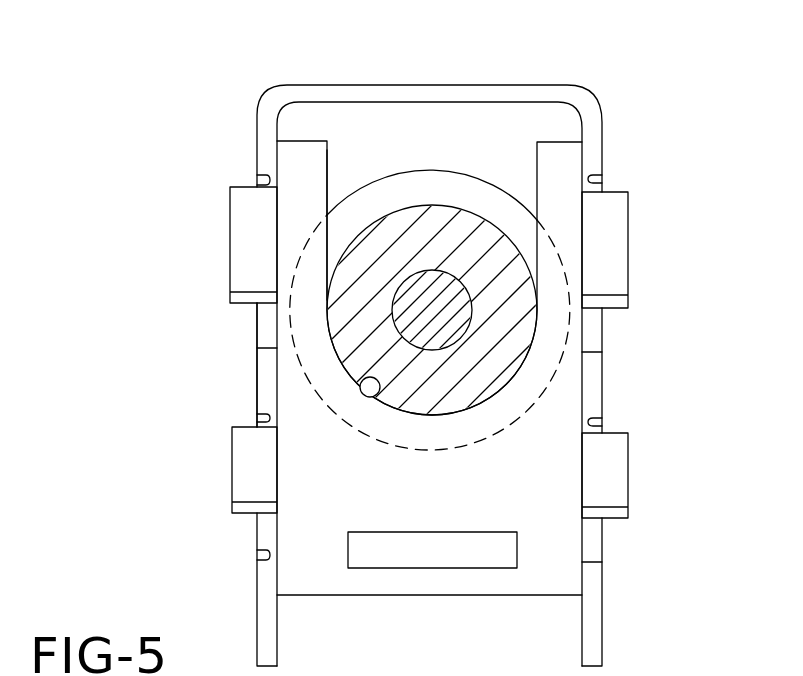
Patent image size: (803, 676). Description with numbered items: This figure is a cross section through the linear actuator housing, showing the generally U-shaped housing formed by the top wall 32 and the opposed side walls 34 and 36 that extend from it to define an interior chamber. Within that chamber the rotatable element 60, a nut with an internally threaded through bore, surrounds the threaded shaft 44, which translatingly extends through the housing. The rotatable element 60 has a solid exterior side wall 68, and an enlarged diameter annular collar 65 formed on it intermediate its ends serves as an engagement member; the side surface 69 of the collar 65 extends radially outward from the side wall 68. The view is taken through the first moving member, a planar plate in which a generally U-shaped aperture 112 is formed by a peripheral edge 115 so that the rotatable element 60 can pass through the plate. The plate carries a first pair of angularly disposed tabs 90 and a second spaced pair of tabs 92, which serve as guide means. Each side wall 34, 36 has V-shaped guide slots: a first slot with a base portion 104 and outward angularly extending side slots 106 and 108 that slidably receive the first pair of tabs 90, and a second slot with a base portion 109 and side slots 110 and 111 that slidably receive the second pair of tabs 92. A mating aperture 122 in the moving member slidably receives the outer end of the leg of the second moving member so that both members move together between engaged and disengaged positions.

The top wall 32 is at (421, 86).
The rotatable element 60 is at (256, 114).
The aperture 112 is at (327, 258).
The annular collar 65 is at (383, 192).
The side surface 69 is at (380, 218).
The exterior side wall 68 is at (483, 215).
The shaft 44 is at (432, 286).
The peripheral edge 115 is at (364, 392).
The first pair of tabs 90 is at (237, 265).
The second pair of tabs 92 is at (243, 475).
The side slot 108 is at (257, 178).
The side slot 106 is at (603, 178).
The side slot 111 is at (257, 415).
The side slot 110 is at (603, 422).
The base portion 109 is at (257, 548).
The base portion 104 is at (263, 343).
The side wall 36 is at (260, 390).
The side wall 34 is at (600, 380).
The mating aperture 122 is at (437, 553).